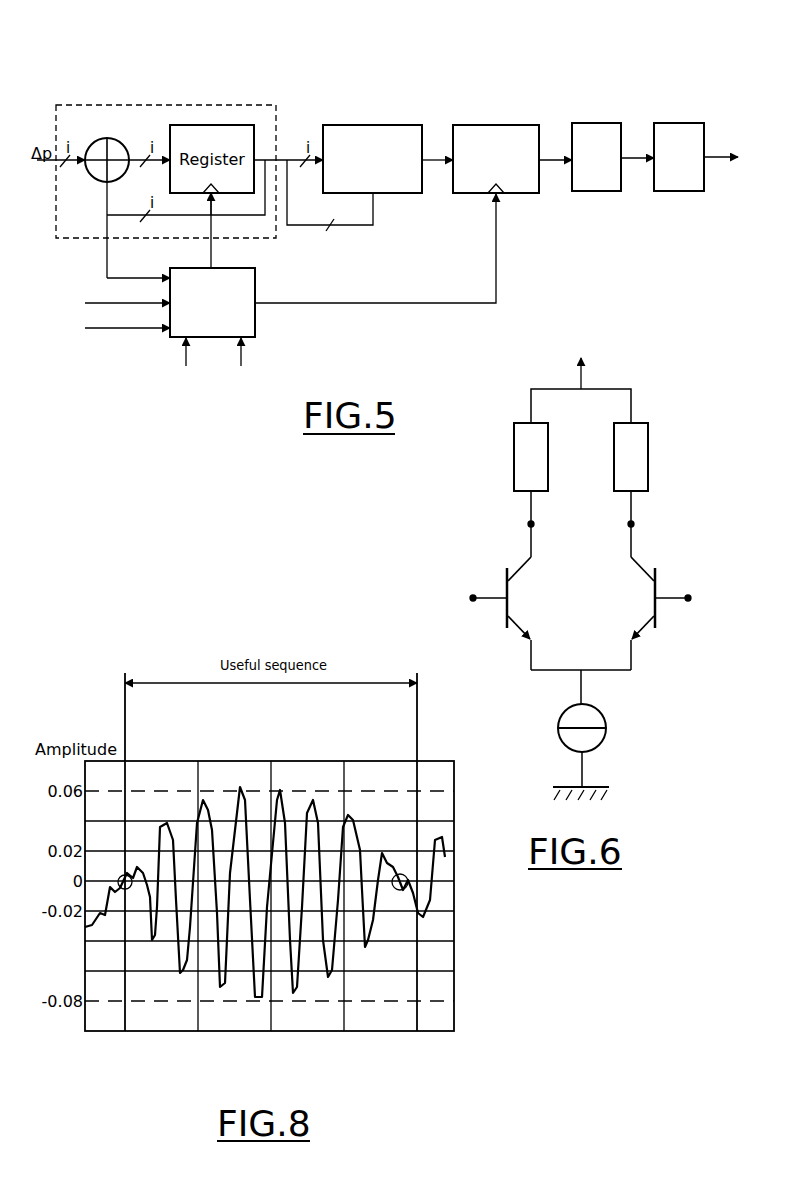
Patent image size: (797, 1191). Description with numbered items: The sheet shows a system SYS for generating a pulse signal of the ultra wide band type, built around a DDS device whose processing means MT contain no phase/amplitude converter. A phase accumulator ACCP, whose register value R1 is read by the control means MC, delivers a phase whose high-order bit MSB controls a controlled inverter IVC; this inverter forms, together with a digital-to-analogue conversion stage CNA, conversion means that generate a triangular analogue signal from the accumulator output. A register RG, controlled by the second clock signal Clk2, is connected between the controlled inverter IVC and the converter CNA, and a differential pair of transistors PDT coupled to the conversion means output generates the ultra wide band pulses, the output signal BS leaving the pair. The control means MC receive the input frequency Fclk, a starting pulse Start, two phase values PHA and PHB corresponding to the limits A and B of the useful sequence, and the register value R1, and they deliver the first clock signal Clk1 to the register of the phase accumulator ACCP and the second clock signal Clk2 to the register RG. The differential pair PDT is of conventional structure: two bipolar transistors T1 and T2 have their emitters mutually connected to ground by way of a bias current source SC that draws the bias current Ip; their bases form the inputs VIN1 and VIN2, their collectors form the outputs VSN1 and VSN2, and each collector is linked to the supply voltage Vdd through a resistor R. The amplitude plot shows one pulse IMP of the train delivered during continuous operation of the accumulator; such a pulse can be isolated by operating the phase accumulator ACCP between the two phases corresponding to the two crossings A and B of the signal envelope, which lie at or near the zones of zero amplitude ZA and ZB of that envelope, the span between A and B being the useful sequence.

In FIG. 5, the phase accumulator ACCP is at (274, 104).
In FIG. 5, the system for generating a pulse signal SYS is at (396, 51).
In FIG. 5, the controlled inverter IVC is at (375, 123).
In FIG. 5, the processing means MT is at (486, 86).
In FIG. 5, the register RG is at (525, 123).
In FIG. 5, the differential pair of transistors PDT is at (680, 121).
In FIG. 6, the differential pair of transistors PDT is at (669, 367).
In FIG. 5, the output signal BS is at (715, 160).
In FIG. 5, the high-order bit MSB is at (330, 208).
In FIG. 5, the digital-to-analog converter CNA is at (598, 193).
In FIG. 5, the DDS device DDS is at (531, 251).
In FIG. 5, the control means MC is at (257, 317).
In FIG. 5, the register value R1 is at (138, 266).
In FIG. 5, the first clock signal Clk1 is at (231, 230).
In FIG. 5, the second clock signal Clk2 is at (375, 248).
In FIG. 5, the input frequency Fclk is at (114, 302).
In FIG. 5, the start pulse Start is at (107, 327).
In FIG. 5, the first phase value PHA is at (185, 365).
In FIG. 5, the second phase value PHB is at (240, 365).
In FIG. 6, the supply voltage Vdd is at (582, 362).
In FIG. 6, the resistor R is at (514, 457).
In FIG. 6, the first output VSN1 is at (530, 524).
In FIG. 6, the second output VSN2 is at (633, 524).
In FIG. 6, the first input VIN1 is at (470, 597).
In FIG. 6, the second input VIN2 is at (696, 597).
In FIG. 6, the first transistor T1 is at (513, 641).
In FIG. 6, the second transistor T2 is at (650, 641).
In FIG. 6, the bias current source SC is at (558, 712).
In FIG. 6, the bias current Ip is at (627, 762).
In FIG. 8, the first crossing A is at (129, 786).
In FIG. 8, the second crossing B is at (410, 786).
In FIG. 8, the first zone of zero amplitude ZA is at (130, 893).
In FIG. 8, the second zone of zero amplitude ZB is at (408, 891).
In FIG. 8, the pulse IMP is at (270, 1036).